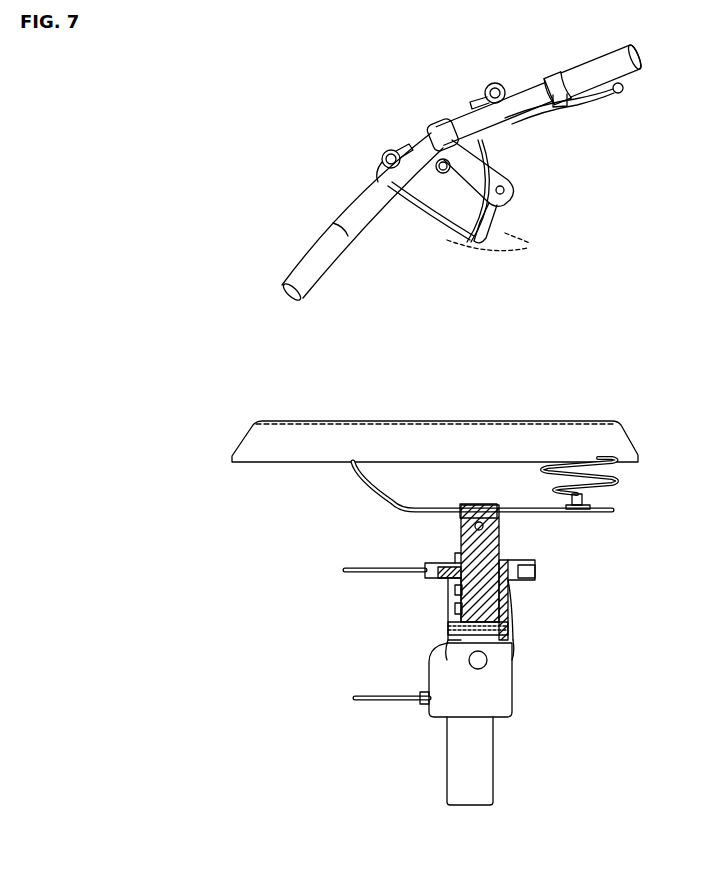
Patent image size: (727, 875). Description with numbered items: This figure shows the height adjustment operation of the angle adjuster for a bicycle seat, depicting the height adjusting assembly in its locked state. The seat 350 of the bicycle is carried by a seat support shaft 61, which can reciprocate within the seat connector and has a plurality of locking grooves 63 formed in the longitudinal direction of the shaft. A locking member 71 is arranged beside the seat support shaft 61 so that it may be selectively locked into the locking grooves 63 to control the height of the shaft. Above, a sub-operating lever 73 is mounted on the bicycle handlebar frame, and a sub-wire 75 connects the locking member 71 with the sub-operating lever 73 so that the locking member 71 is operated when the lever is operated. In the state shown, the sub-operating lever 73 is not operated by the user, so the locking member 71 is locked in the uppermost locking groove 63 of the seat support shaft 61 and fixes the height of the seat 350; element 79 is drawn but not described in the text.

The sub-operating lever 73 is at (389, 151).
The sub-wire 75 is at (428, 215).
The seat 350 is at (570, 426).
The seat support shaft 61 is at (500, 546).
The locking member 71 is at (446, 564).
The locking grooves 63 is at (453, 611).
The band 79 is at (512, 628).